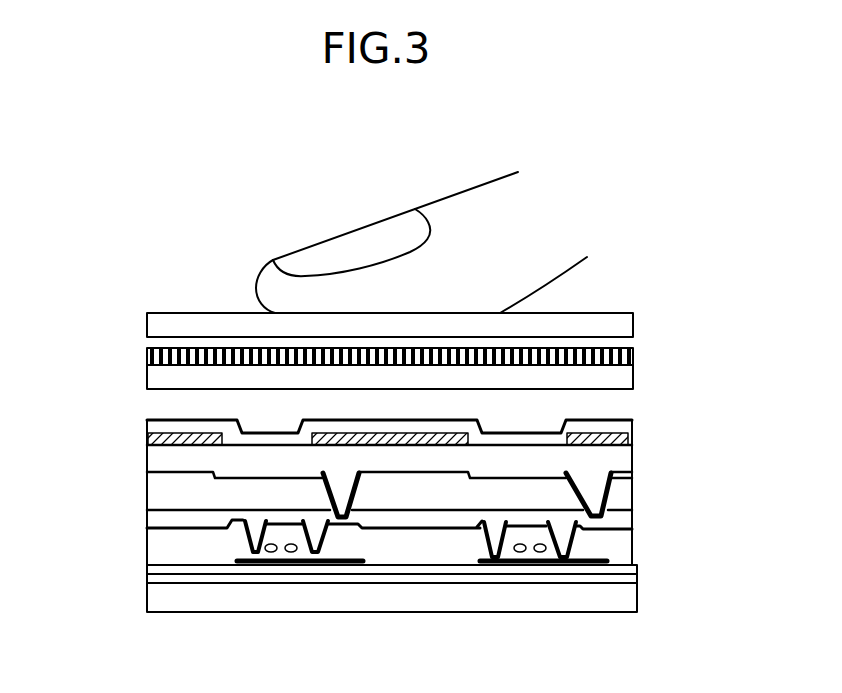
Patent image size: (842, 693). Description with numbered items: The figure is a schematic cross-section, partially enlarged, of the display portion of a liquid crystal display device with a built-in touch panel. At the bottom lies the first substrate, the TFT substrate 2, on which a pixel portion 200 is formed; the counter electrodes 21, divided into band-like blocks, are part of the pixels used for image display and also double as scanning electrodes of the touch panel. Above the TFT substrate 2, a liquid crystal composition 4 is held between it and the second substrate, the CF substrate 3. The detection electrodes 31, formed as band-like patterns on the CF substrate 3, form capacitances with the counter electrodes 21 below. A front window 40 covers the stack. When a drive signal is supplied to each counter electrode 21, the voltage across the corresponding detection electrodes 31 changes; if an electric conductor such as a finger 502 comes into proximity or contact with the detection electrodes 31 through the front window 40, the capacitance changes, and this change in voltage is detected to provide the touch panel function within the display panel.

The finger 502 is at (297, 247).
The front window 40 is at (635, 314).
The detection electrodes 31 is at (633, 358).
The second substrate (CF substrate) 3 is at (632, 382).
The liquid crystal composition 4 is at (607, 407).
The counter electrode 21 is at (143, 432).
The pixel portion 200 is at (398, 487).
The first substrate (TFT substrate) 2 is at (638, 582).